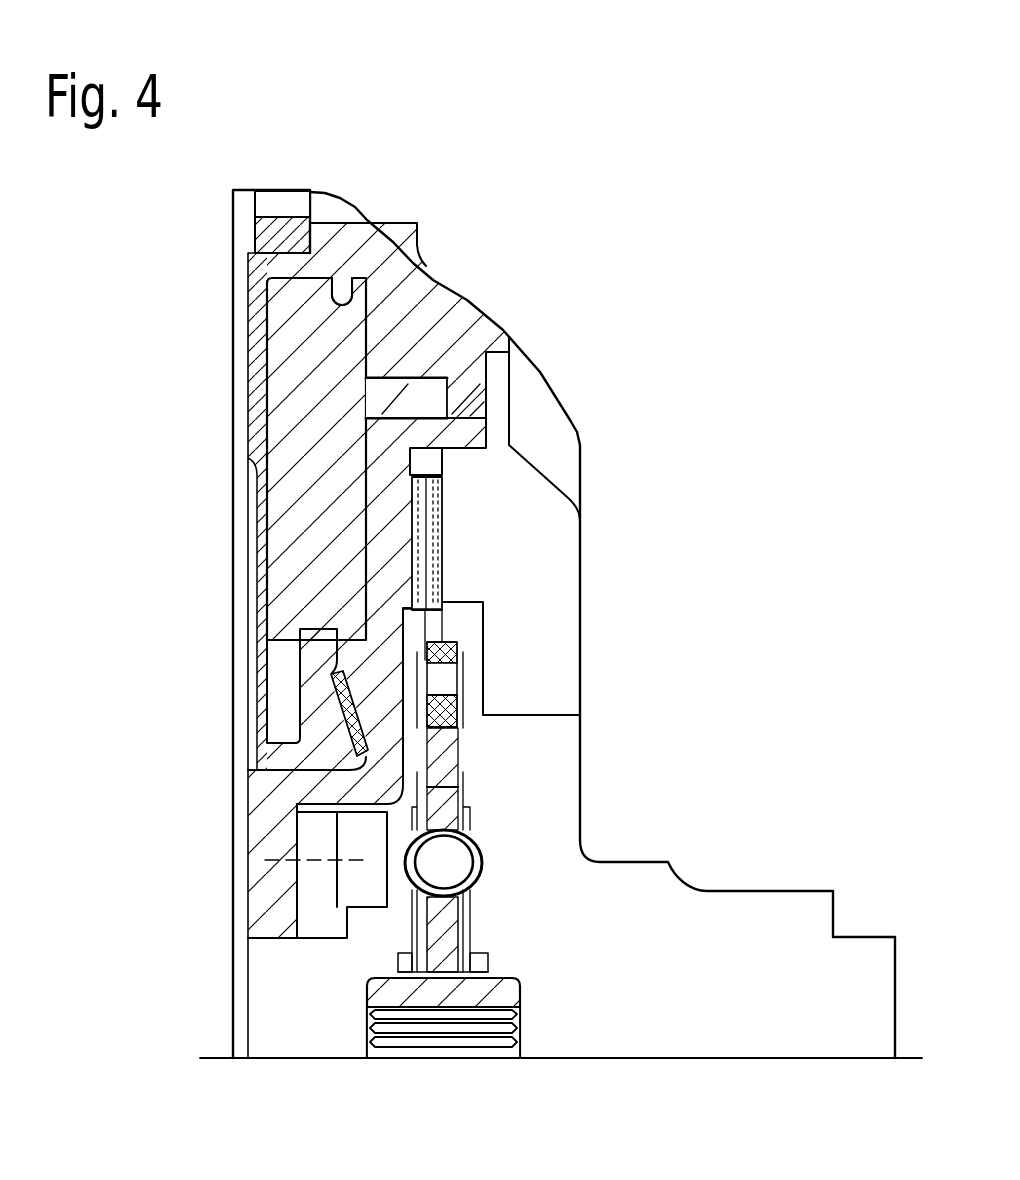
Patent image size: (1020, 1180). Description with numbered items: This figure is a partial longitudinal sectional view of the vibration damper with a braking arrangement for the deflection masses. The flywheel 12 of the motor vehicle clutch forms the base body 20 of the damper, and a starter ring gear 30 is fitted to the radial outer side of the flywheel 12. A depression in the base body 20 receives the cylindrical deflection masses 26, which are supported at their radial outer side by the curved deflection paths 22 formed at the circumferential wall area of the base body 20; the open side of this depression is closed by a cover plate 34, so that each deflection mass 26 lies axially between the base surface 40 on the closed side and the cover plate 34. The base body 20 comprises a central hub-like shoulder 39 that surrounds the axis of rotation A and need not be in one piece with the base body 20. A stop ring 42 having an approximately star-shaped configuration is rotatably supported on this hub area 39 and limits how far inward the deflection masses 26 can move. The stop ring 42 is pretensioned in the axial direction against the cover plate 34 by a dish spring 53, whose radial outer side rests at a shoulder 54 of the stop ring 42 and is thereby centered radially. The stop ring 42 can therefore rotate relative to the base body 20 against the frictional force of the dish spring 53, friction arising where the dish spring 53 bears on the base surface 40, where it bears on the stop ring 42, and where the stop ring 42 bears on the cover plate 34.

The flywheel 12 is at (448, 302).
The base body 20 is at (273, 940).
The deflection path 22 is at (353, 290).
The deflection mass 26 is at (280, 383).
The starter ring gear 30 is at (278, 190).
The cover plate 34 is at (255, 512).
The hub-like shoulder 39 is at (262, 792).
The base surface 40 is at (365, 472).
The stop ring 42 is at (432, 699).
The dish spring 53 is at (348, 698).
The shoulder 54 is at (337, 638).
The axis of rotation A is at (291, 1060).